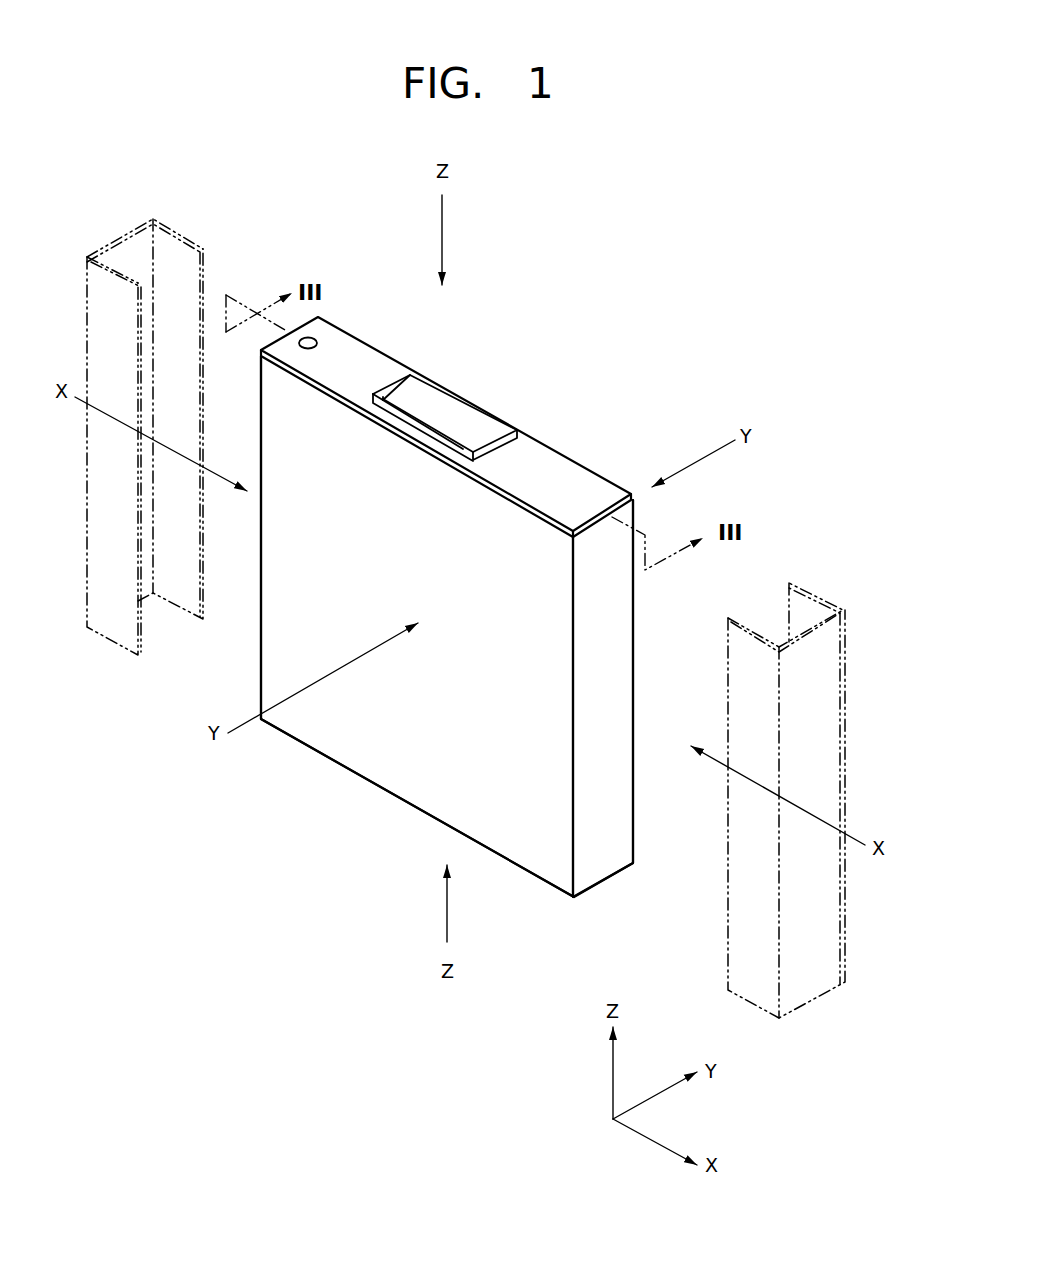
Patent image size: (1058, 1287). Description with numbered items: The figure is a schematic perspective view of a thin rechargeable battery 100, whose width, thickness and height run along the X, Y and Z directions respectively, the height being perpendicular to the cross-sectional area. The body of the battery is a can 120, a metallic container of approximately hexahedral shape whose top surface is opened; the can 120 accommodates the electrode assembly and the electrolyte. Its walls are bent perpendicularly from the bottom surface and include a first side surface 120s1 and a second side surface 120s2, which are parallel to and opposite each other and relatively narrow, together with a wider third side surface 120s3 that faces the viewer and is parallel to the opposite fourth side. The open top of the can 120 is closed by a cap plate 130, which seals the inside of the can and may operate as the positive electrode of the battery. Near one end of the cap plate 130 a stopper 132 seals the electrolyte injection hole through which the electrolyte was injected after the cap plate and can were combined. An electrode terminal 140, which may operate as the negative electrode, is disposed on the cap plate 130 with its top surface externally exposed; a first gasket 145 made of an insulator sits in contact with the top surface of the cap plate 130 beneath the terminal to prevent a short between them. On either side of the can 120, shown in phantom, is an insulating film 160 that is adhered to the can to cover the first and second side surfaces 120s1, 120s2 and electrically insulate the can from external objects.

The rechargeable battery 100 is at (635, 372).
The can 120 is at (428, 817).
The first side surface 120s1 is at (260, 617).
The second side surface 120s2 is at (622, 637).
The third side surface 120s3 is at (368, 750).
The cap plate 130 is at (543, 467).
The stopper 132 is at (310, 338).
The electrode terminal 140 is at (441, 393).
The first gasket 145 is at (405, 386).
The insulating film 160 is at (172, 240).